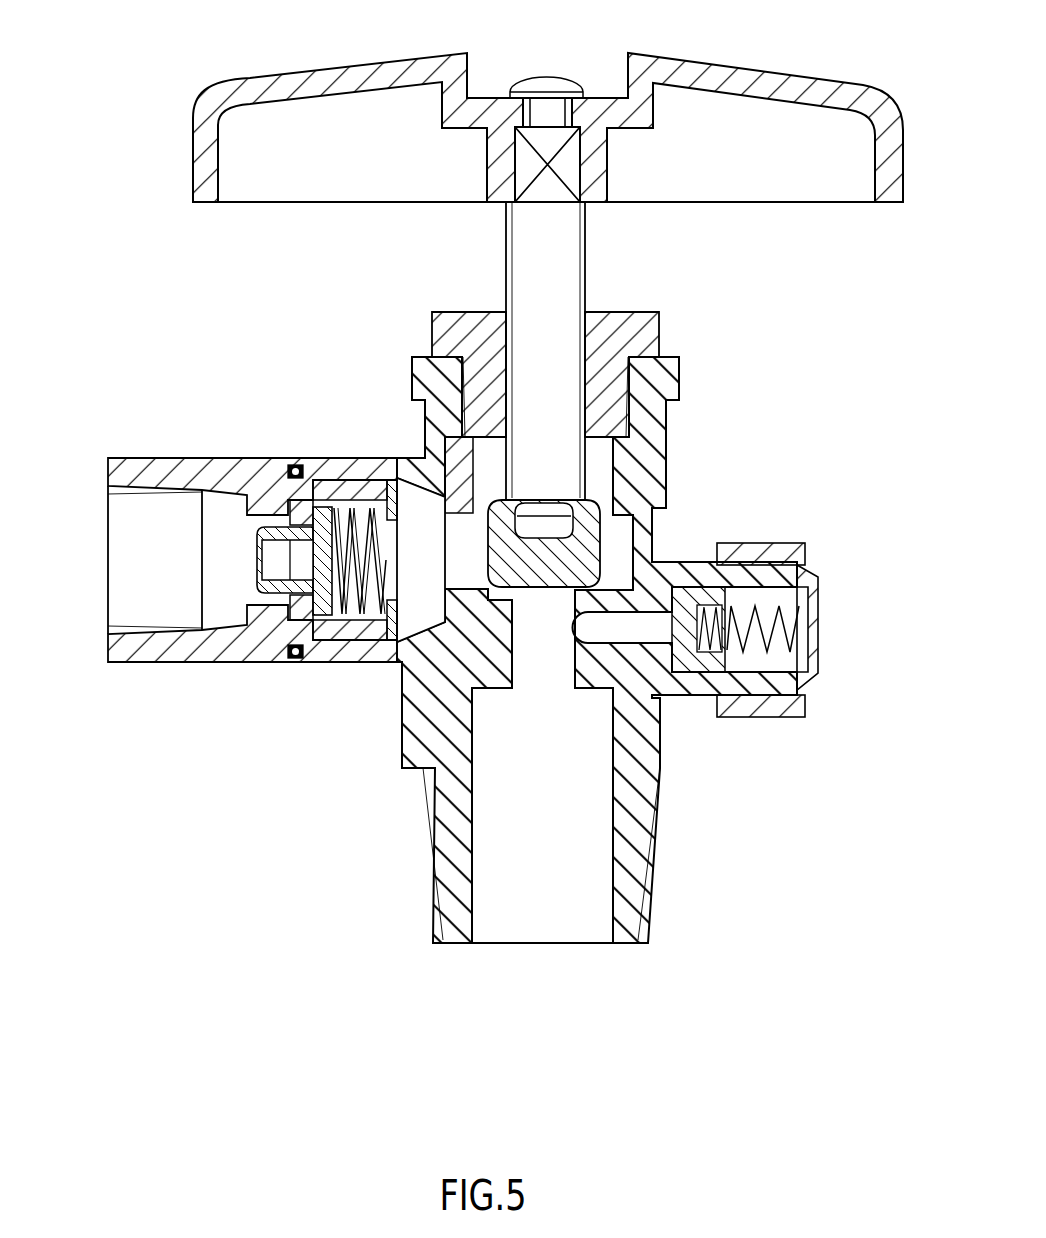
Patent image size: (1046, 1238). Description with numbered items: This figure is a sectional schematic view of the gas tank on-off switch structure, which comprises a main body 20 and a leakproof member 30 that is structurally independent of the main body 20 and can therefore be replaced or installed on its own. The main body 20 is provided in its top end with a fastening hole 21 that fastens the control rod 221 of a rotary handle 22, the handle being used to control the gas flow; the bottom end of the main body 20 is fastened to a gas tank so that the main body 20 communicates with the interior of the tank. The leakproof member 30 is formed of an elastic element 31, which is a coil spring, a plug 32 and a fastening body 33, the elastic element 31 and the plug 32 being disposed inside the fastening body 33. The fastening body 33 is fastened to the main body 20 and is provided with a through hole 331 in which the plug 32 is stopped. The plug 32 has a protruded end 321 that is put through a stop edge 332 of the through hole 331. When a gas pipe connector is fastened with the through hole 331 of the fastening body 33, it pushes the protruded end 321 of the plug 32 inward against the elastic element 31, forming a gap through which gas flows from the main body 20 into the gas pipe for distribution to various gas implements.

The main body 20 is at (645, 472).
The fastening hole 21 is at (587, 343).
The rotary handle 22 is at (765, 85).
The control rod 221 is at (522, 242).
The leakproof member 30 is at (240, 621).
The elastic element 31 is at (367, 592).
The plug 32 is at (302, 565).
The protruded end 321 is at (270, 588).
The fastening body 33 is at (216, 564).
The through hole 331 is at (217, 540).
The stop edge 332 is at (303, 612).